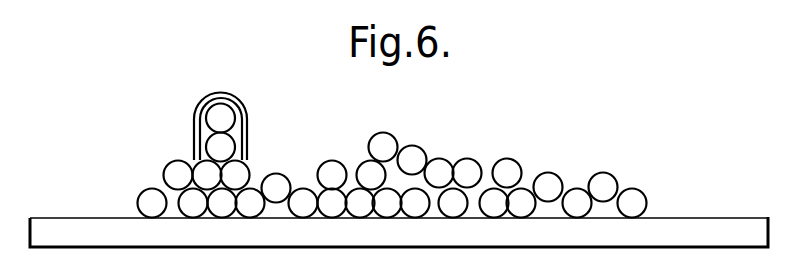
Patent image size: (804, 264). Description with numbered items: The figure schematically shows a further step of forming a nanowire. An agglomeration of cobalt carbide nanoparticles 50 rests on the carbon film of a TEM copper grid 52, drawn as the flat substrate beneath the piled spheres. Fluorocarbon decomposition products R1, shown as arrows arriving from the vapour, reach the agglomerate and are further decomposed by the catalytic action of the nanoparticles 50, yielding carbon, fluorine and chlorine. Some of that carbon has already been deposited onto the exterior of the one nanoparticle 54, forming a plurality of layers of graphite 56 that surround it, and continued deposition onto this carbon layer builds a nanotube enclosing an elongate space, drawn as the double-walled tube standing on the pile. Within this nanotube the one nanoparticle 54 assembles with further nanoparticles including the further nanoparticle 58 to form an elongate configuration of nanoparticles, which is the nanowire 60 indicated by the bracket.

The cobalt carbide nanoparticles 50 is at (602, 183).
The TEM copper grid 52 is at (715, 228).
The one nanoparticle 54 is at (224, 119).
The layers of graphite 56 is at (220, 98).
The further nanoparticle 58 is at (221, 147).
The nanowire 60 is at (187, 105).
The fluorocarbon decomposition products R1 is at (318, 150).